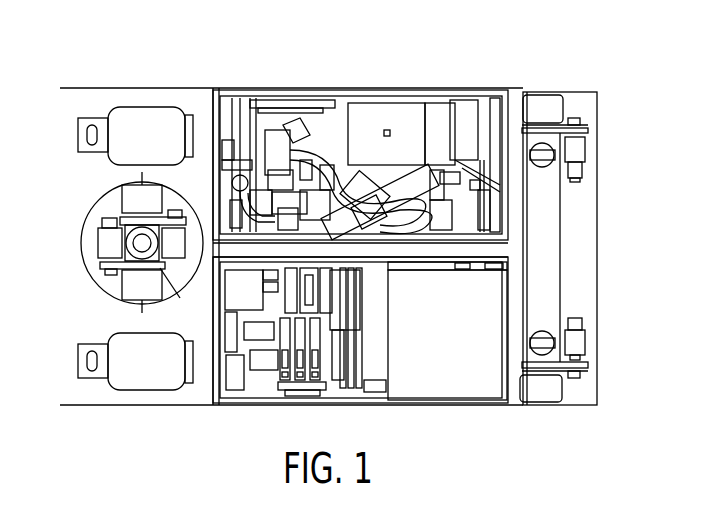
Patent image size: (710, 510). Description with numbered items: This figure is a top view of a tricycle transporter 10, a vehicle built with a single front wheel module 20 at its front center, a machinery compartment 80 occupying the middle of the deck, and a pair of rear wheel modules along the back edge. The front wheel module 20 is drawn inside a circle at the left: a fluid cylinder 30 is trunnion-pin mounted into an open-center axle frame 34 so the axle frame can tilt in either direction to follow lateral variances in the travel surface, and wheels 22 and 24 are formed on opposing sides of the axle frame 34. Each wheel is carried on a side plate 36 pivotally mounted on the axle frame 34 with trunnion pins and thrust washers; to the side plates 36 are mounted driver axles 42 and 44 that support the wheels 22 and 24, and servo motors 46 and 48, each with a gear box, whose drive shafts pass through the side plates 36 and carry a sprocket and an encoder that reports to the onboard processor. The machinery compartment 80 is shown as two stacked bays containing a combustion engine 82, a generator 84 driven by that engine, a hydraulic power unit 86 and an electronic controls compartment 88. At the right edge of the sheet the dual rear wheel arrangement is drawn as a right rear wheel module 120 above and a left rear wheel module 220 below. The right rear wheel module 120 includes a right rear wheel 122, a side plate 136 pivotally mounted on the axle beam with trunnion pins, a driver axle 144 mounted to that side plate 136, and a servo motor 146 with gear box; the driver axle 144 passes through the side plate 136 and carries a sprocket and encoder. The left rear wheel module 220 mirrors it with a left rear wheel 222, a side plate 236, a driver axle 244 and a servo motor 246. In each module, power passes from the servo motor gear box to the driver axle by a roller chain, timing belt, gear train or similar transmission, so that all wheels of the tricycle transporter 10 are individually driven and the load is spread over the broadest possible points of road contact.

The tricycle transporter 10 is at (101, 70).
The front wheel module 20 is at (125, 241).
The wheel 22 is at (123, 190).
The wheel 24 is at (129, 296).
The fluid cylinder 30 is at (106, 270).
The axle frame 34 is at (160, 268).
The side plate 36 is at (100, 262).
The driver axle 42 is at (134, 222).
The driver axle 44 is at (125, 278).
The servo motor 46 is at (182, 222).
The servo motor 48 is at (99, 238).
The machinery compartment 80 is at (263, 92).
The combustion engine 82 is at (297, 120).
The generator 84 is at (393, 108).
The hydraulic power unit 86 is at (350, 312).
The electronic controls compartment 88 is at (432, 386).
The right rear wheel module 120 is at (588, 231).
The right rear wheel 122 is at (538, 105).
The side plate 136 is at (588, 131).
The driver axle 144 is at (546, 130).
The servo motor 146 is at (582, 153).
The left rear wheel module 220 is at (596, 376).
The left rear wheel 222 is at (539, 390).
The side plate 236 is at (546, 366).
The driver axle 244 is at (545, 375).
The servo motor 246 is at (580, 339).